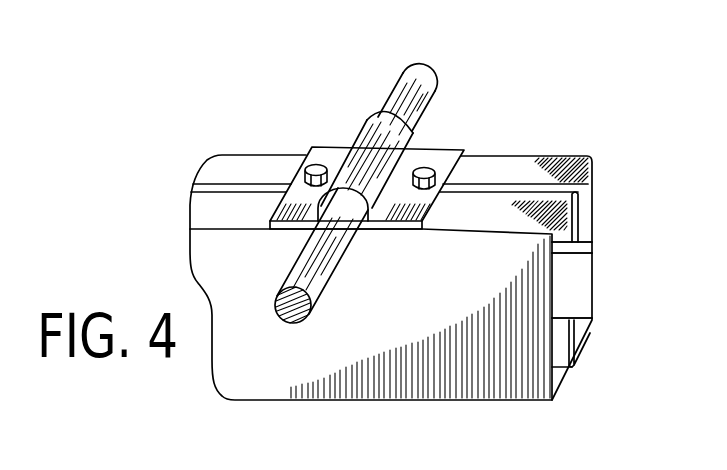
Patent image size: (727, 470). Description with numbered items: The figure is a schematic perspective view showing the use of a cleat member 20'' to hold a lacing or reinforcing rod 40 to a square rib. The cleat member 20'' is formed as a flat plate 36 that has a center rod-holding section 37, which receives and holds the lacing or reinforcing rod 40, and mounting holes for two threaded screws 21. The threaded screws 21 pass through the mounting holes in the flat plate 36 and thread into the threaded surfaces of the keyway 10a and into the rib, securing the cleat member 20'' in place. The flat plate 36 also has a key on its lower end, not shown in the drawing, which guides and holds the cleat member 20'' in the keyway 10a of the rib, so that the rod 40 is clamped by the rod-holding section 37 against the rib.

The cleat member 20'' is at (391, 235).
The keyway 10a is at (588, 208).
The flat plate 36 is at (337, 152).
The center rod-holding section 37 is at (375, 117).
The lacing or reinforcing rod 40 is at (424, 72).
The threaded screws 21 is at (308, 161).